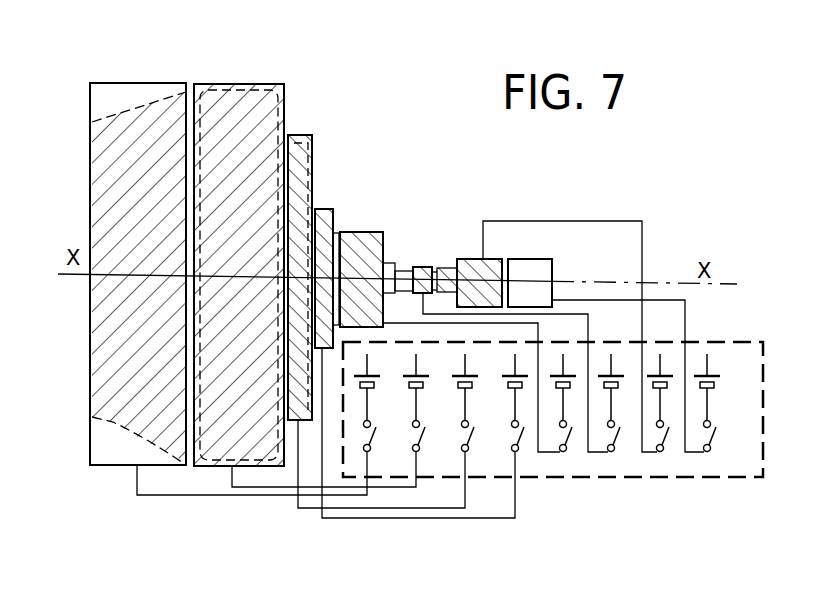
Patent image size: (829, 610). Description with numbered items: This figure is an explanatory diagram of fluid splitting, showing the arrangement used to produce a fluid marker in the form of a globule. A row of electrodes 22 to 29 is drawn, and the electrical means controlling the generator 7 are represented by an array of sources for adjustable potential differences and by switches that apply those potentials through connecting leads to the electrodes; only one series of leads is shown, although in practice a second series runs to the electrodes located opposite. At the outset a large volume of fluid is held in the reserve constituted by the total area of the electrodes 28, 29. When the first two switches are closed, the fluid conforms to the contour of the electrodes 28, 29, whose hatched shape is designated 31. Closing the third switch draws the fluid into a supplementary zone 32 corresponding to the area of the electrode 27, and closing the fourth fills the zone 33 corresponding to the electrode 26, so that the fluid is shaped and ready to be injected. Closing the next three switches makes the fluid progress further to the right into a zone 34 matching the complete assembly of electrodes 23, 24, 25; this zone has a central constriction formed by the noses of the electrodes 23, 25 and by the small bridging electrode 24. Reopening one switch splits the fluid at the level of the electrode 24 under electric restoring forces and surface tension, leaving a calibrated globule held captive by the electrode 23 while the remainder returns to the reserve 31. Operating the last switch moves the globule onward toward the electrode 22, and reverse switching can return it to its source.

The generator 7 is at (744, 342).
The electrode 22 is at (545, 260).
The electrode 23 is at (485, 260).
The small bridging electrode 24 is at (423, 267).
The electrode 25 is at (373, 232).
The electrode 26 is at (322, 210).
The electrode 27 is at (302, 135).
The electrode 28 is at (250, 84).
The electrode 29 is at (166, 83).
The hatched shape of the electrodes 28 and 29 31 is at (269, 88).
The supplementary zone 32 is at (305, 180).
The zone 33 is at (336, 233).
The zone 34 is at (381, 261).